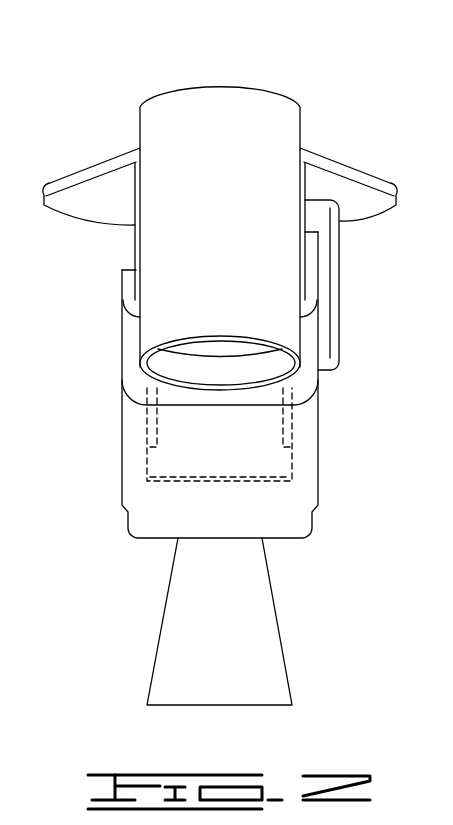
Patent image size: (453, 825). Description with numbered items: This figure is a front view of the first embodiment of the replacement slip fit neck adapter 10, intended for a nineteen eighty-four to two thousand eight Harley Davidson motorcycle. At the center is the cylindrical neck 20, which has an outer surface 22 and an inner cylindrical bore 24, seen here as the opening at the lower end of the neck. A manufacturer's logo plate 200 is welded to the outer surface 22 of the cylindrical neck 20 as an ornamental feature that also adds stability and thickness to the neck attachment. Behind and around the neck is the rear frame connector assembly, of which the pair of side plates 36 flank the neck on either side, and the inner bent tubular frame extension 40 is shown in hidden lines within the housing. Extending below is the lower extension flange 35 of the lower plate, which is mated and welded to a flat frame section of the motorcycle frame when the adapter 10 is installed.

The replacement slip fit neck adapter 10 is at (366, 97).
The cylindrical neck 20 is at (241, 98).
The outer surface 22 is at (265, 220).
The inner cylindrical bore 24 is at (187, 375).
The manufacturer's logo plate 200 is at (323, 162).
The side plates 36 is at (122, 378).
The inner bent tubular frame extension 40 is at (292, 430).
The lower extension flange 35 is at (258, 660).